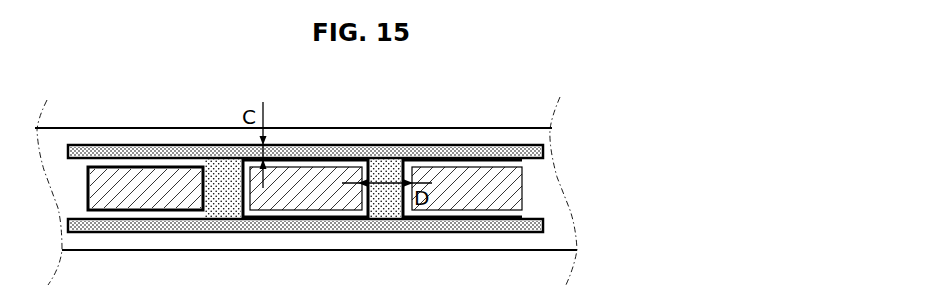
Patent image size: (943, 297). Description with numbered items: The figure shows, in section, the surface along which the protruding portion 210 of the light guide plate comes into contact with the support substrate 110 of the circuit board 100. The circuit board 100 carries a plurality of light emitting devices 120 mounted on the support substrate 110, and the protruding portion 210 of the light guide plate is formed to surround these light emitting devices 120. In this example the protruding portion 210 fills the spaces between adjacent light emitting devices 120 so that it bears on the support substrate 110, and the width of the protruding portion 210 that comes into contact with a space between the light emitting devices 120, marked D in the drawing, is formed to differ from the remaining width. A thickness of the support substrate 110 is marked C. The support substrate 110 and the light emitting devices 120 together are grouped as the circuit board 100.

The protruding portion 210 is at (317, 145).
The circuit board 100 is at (379, 200).
The support substrate 110 is at (558, 223).
The light emitting devices 120 is at (513, 188).